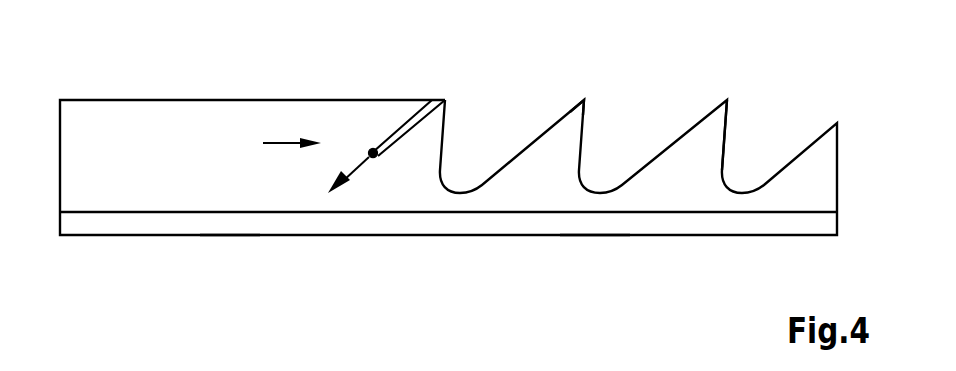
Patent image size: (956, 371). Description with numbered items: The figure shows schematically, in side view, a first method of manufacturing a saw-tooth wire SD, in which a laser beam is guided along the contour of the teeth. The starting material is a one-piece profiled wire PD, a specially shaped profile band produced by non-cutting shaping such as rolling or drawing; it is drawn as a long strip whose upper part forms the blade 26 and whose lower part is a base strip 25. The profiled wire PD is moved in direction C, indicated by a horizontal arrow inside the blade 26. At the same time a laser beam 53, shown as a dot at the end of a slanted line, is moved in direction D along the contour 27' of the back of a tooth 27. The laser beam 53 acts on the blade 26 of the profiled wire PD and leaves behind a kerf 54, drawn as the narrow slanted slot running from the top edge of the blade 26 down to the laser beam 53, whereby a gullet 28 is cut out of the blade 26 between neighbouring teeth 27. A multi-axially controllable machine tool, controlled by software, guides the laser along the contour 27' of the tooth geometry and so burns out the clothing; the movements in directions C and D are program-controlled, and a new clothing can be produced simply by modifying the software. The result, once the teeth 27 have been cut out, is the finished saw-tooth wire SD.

The base strip / substrate 25 is at (108, 223).
The blade 26 is at (149, 120).
The teeth 27 is at (638, 140).
The contour of the teeth 27' is at (569, 68).
The gullet 28 is at (646, 127).
The laser beam 53 is at (372, 147).
The kerf 54 is at (415, 115).
The direction of profiled wire movement C is at (288, 140).
The direction of laser beam movement D is at (339, 177).
The profiled wire PD is at (225, 237).
The saw-tooth wire SD is at (587, 238).